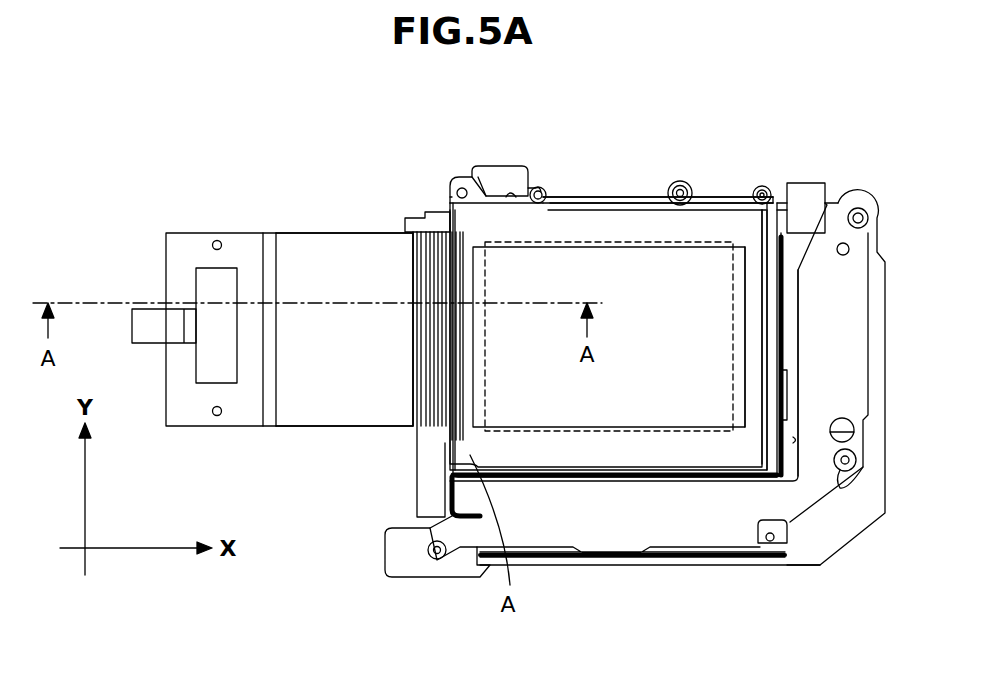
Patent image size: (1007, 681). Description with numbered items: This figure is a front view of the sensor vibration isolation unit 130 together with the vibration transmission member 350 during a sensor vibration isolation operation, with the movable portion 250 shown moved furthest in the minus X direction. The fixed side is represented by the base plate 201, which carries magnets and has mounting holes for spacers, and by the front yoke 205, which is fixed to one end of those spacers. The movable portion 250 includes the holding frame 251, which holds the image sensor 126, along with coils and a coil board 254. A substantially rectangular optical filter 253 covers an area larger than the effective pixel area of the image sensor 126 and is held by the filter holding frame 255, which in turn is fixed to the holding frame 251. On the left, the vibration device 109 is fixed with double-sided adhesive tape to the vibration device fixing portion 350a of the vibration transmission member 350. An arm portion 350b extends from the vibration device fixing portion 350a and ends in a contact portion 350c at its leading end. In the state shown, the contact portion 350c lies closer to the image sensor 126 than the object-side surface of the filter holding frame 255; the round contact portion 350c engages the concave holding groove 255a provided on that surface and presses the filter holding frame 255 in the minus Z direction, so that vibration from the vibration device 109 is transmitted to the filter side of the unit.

The vibration device 109 is at (208, 283).
The image sensor 126 is at (655, 435).
The sensor vibration isolation unit 130 is at (768, 578).
The base plate 201 is at (830, 545).
The front yoke 205 is at (833, 238).
The movable portion 250 is at (723, 187).
The holding frame 251 is at (493, 187).
The optical filter 253 is at (633, 267).
The coil board 254 is at (803, 198).
The filter holding frame 255 is at (563, 200).
The holding groove 255a is at (483, 180).
The vibration transmission member 350 is at (307, 233).
The vibration device fixing portion 350a is at (248, 247).
The arm portion 350b is at (370, 245).
The contact portion 350c is at (440, 427).